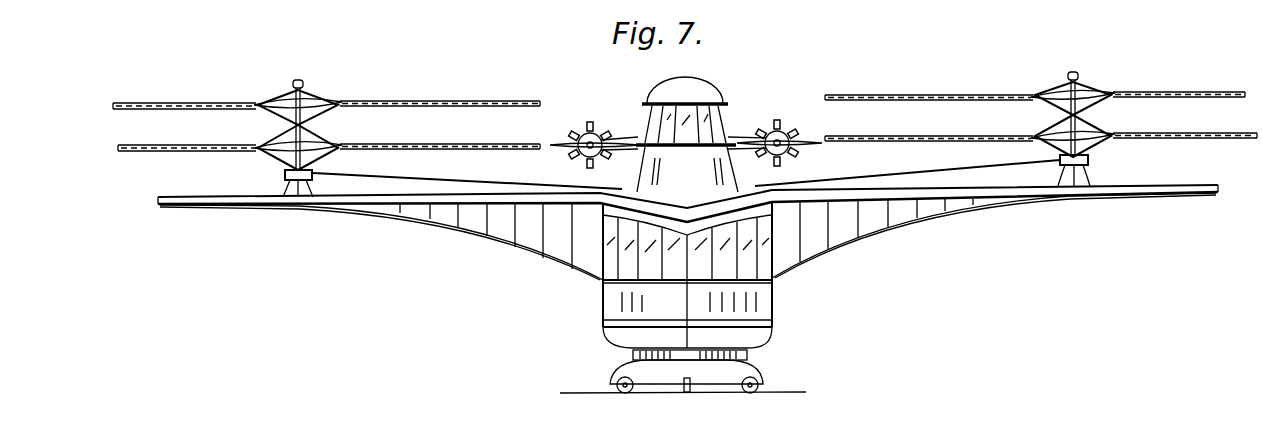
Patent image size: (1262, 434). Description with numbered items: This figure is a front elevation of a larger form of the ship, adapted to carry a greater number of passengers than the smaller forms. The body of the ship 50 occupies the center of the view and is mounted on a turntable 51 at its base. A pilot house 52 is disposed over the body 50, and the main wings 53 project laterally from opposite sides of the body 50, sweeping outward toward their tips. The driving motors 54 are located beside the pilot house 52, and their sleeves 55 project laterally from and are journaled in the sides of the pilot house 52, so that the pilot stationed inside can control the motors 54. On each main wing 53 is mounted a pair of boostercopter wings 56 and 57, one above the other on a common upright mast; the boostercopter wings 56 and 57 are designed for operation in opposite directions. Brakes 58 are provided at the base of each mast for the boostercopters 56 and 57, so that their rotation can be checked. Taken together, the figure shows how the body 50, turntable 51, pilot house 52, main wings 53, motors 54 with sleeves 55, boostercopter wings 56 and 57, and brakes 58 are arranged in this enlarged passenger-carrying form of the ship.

The body of the ship 50 is at (773, 308).
The turntable 51 is at (760, 374).
The pilot house 52 is at (667, 100).
The main wings 53 is at (222, 208).
The driving motors 54 is at (588, 124).
The sleeves 55 is at (630, 136).
The boostercopter wing 56 is at (318, 139).
The boostercopter wing 57 is at (313, 97).
The brakes 58 is at (285, 174).